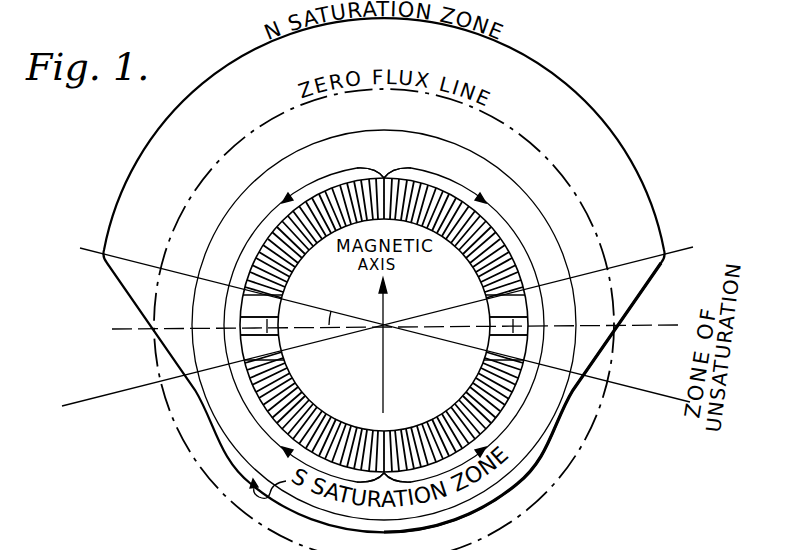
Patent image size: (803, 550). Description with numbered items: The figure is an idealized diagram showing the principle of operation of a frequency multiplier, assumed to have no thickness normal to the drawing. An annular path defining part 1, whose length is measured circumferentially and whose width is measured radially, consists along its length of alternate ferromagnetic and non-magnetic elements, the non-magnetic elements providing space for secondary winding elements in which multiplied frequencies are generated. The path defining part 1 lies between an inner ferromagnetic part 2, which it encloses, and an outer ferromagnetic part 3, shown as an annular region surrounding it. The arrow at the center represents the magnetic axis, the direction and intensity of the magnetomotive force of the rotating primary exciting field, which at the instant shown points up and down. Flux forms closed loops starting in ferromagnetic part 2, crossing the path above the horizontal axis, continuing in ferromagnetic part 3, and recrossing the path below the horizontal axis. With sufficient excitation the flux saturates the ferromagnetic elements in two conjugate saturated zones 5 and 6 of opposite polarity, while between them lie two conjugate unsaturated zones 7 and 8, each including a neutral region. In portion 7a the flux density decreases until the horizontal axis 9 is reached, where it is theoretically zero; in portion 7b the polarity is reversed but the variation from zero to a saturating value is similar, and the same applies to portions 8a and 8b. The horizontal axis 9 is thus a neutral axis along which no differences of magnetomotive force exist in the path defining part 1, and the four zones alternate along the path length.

The annular path defining part 1 is at (468, 247).
The ferromagnetic part 2 is at (384, 325).
The ferromagnetic part 3 is at (384, 322).
The saturated zone 5 is at (401, 177).
The saturated zone 6 is at (401, 431).
The unsaturated zone 7 is at (280, 315).
The portion of unsaturated zone 7a is at (261, 306).
The portion of unsaturated zone 7b is at (262, 347).
The unsaturated zone 8 is at (490, 348).
The portion of unsaturated zone 8a is at (507, 306).
The portion of unsaturated zone 8b is at (506, 347).
The horizontal axis 9 is at (335, 314).